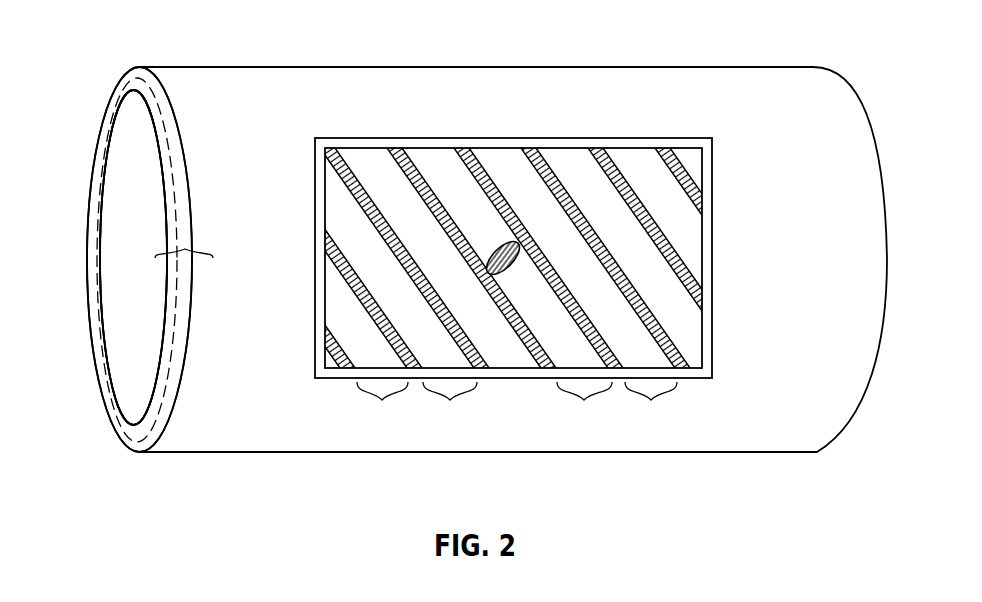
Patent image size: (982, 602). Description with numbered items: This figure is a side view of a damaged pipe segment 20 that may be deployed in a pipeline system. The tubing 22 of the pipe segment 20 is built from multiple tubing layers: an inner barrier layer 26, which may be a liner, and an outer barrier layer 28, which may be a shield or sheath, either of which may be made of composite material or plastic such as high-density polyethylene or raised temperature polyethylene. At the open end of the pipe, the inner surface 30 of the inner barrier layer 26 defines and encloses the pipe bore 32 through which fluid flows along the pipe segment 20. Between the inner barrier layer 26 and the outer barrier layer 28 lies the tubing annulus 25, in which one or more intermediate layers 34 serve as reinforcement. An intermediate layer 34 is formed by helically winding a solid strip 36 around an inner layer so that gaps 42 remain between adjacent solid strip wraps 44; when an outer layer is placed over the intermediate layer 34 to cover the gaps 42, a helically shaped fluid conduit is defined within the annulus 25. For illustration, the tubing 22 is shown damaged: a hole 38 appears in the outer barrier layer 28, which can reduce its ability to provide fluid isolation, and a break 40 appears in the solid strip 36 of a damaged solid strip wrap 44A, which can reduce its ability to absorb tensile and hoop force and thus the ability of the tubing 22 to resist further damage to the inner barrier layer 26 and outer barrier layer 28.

The pipe segment 20 is at (815, 31).
The tubing 22 is at (185, 248).
The tubing annulus 25 is at (117, 441).
The inner barrier layer 26 is at (126, 107).
The outer barrier layer 28 is at (129, 69).
The inner surface 30 is at (124, 366).
The pipe bore 32 is at (127, 273).
The intermediate layer 34 is at (110, 128).
The solid strip 36 is at (367, 158).
The hole 38 is at (499, 261).
The break 40 is at (496, 251).
The gaps 42 is at (499, 261).
The solid strip wraps 44 is at (517, 408).
The damaged solid strip wrap 44A is at (584, 408).